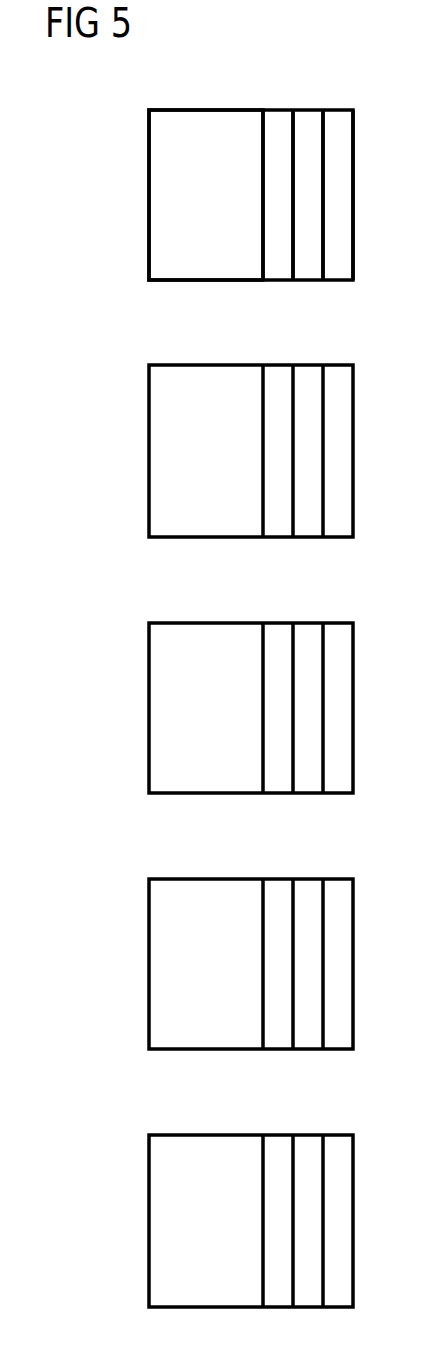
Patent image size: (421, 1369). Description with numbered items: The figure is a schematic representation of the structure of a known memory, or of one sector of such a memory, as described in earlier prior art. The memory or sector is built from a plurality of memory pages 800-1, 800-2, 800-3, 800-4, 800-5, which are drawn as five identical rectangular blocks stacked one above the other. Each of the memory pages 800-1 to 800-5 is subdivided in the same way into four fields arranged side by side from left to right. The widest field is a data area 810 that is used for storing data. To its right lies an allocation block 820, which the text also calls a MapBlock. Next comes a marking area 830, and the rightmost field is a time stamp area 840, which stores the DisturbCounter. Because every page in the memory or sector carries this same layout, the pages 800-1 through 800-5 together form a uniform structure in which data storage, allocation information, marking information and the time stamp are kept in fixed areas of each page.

The memory page 800-1 is at (148, 194).
The memory page 800-2 is at (148, 452).
The memory page 800-3 is at (148, 709).
The memory page 800-4 is at (148, 965).
The memory page 800-5 is at (148, 1222).
The data area 810 is at (205, 105).
The allocation block 820 is at (276, 108).
The marking area 830 is at (308, 270).
The time stamp area 840 is at (336, 108).